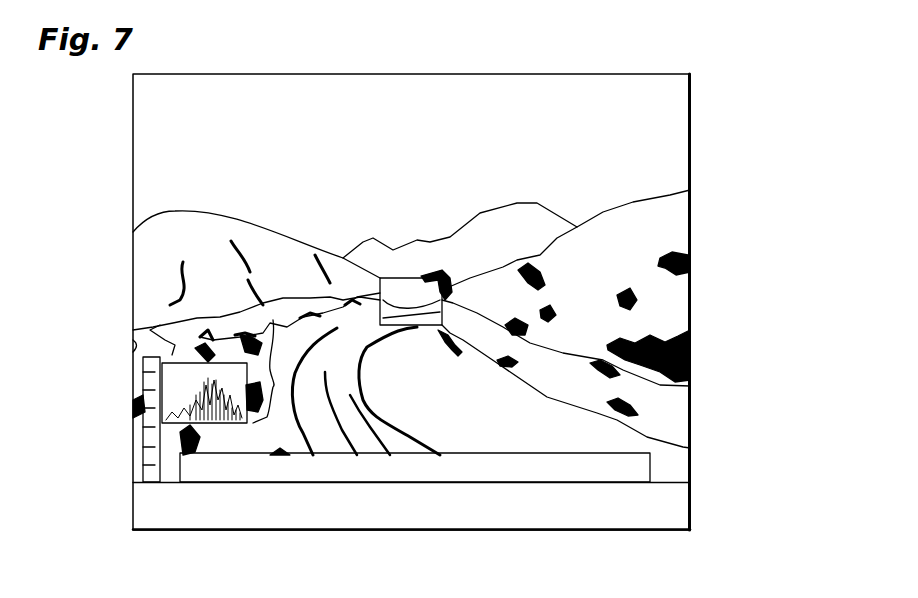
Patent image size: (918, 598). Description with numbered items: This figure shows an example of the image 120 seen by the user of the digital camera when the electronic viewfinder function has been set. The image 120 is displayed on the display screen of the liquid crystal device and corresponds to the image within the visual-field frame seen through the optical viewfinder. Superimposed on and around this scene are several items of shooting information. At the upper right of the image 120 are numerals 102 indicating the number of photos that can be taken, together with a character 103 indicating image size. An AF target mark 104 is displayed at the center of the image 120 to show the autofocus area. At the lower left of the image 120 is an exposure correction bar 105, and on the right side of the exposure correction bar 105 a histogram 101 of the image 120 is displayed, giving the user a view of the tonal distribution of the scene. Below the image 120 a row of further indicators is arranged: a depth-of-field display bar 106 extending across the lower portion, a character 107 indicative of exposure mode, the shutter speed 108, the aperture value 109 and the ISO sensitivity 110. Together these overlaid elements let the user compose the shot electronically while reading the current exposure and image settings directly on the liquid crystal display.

The histogram 101 is at (200, 426).
The numerals indicating the number of photos that can be taken 102 is at (548, 82).
The character indicating image size 103 is at (641, 81).
The AF target mark 104 is at (410, 277).
The exposure correction bar 105 is at (140, 384).
The depth-of-field display bar 106 is at (489, 453).
The character indicative of exposure mode 107 is at (192, 511).
The shutter speed 108 is at (332, 510).
The aperture value 109 is at (464, 510).
The ISO sensitivity 110 is at (589, 510).
The image 120 is at (690, 285).